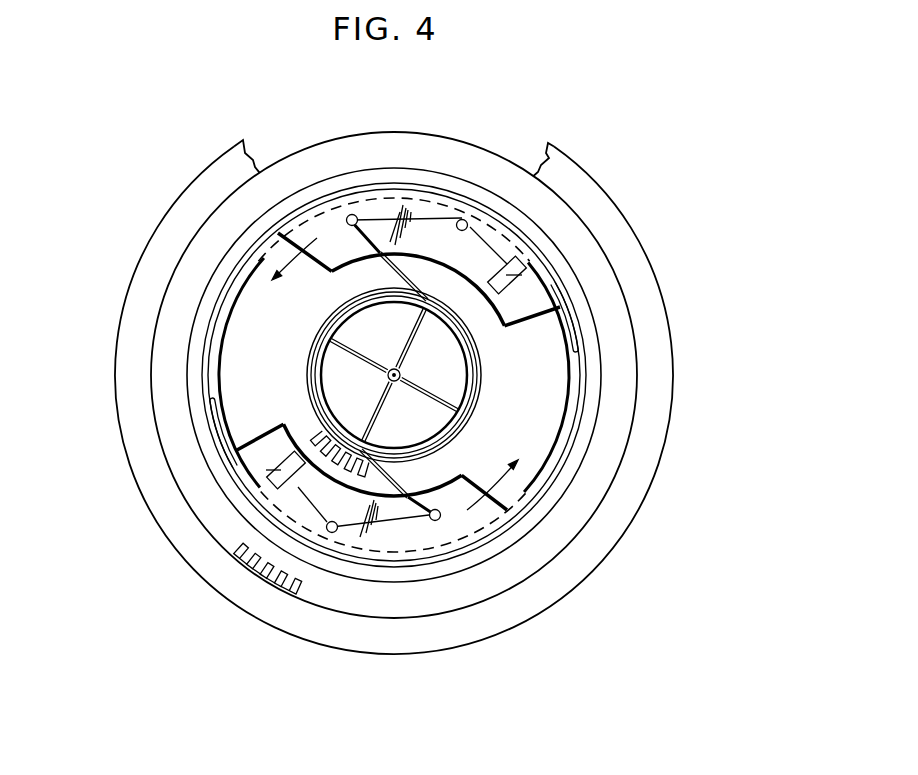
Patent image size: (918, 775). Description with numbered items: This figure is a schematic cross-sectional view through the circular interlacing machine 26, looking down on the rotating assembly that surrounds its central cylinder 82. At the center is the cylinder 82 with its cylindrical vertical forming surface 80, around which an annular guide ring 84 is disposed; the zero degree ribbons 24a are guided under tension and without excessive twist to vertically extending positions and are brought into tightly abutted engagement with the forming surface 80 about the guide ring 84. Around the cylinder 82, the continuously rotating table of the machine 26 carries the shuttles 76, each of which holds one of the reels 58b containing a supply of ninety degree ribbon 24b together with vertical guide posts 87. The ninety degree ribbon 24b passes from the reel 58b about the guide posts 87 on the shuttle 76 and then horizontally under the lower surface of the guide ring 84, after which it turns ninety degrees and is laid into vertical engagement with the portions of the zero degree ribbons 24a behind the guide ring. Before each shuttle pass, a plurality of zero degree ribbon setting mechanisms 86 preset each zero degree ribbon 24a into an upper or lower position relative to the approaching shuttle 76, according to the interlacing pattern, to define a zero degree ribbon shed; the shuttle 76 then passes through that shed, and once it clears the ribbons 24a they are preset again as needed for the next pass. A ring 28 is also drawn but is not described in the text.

The 0 degree ribbon 24a is at (318, 434).
The 90 degree ribbon 24b is at (428, 214).
The circular machine 26 is at (643, 186).
The ring plate 28 is at (488, 397).
The reel 58b is at (527, 279).
The shuttle 76 is at (262, 438).
The cylindrical vertical forming surface 80 is at (333, 313).
The cylinder 82 is at (470, 418).
The annular guide ring 84 is at (313, 343).
The 0 degree ribbon setting mechanism 86 is at (163, 250).
The vertical guide post 87 is at (350, 214).